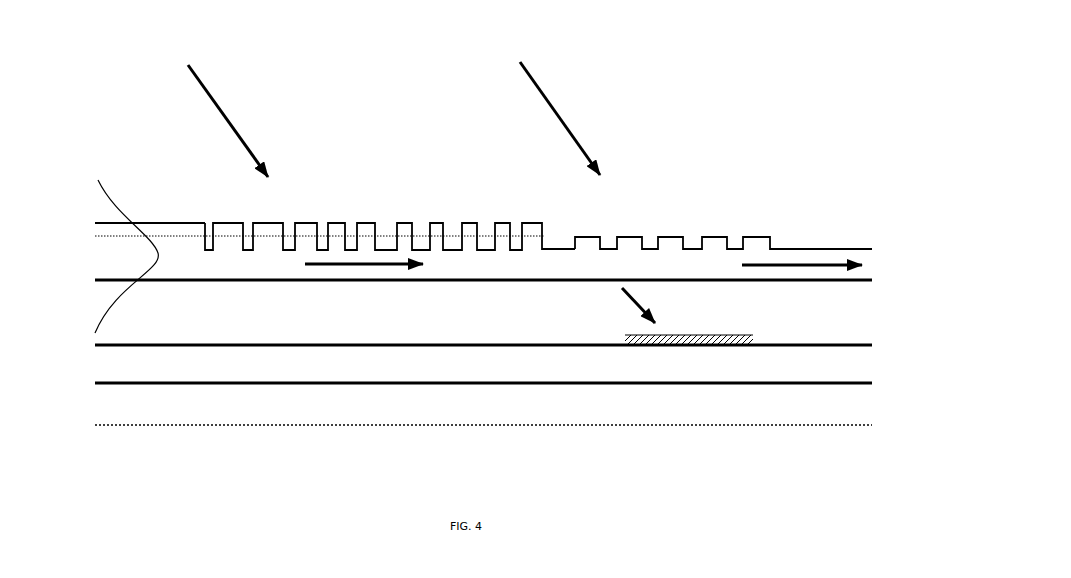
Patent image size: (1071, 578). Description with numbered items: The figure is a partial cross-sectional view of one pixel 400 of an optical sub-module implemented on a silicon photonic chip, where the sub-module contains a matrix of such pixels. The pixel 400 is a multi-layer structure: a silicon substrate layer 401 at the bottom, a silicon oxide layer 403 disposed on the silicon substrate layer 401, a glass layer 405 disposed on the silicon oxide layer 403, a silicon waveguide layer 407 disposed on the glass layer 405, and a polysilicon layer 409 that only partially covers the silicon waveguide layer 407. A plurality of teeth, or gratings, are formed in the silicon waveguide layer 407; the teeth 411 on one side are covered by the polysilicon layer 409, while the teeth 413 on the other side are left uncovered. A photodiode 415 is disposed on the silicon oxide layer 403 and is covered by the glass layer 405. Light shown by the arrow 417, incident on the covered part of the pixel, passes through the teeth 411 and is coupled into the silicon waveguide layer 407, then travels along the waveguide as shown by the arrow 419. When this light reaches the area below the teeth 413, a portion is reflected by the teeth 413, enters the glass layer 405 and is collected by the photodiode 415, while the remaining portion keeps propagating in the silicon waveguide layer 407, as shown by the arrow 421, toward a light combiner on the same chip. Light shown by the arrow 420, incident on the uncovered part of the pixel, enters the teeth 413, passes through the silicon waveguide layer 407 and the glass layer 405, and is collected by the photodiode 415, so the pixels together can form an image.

The pixel 400 is at (850, 112).
The silicon substrate layer 401 is at (95, 413).
The silicon oxide layer 403 is at (95, 372).
The glass layer 405 is at (95, 293).
The silicon waveguide layer 407 is at (98, 258).
The polysilicon layer 409 is at (90, 223).
The teeth 411 is at (418, 222).
The teeth 413 is at (668, 230).
The photodiode 415 is at (622, 340).
The arrow 417 is at (223, 80).
The arrow 419 is at (352, 270).
The arrow 420 is at (555, 82).
The arrow 421 is at (818, 270).